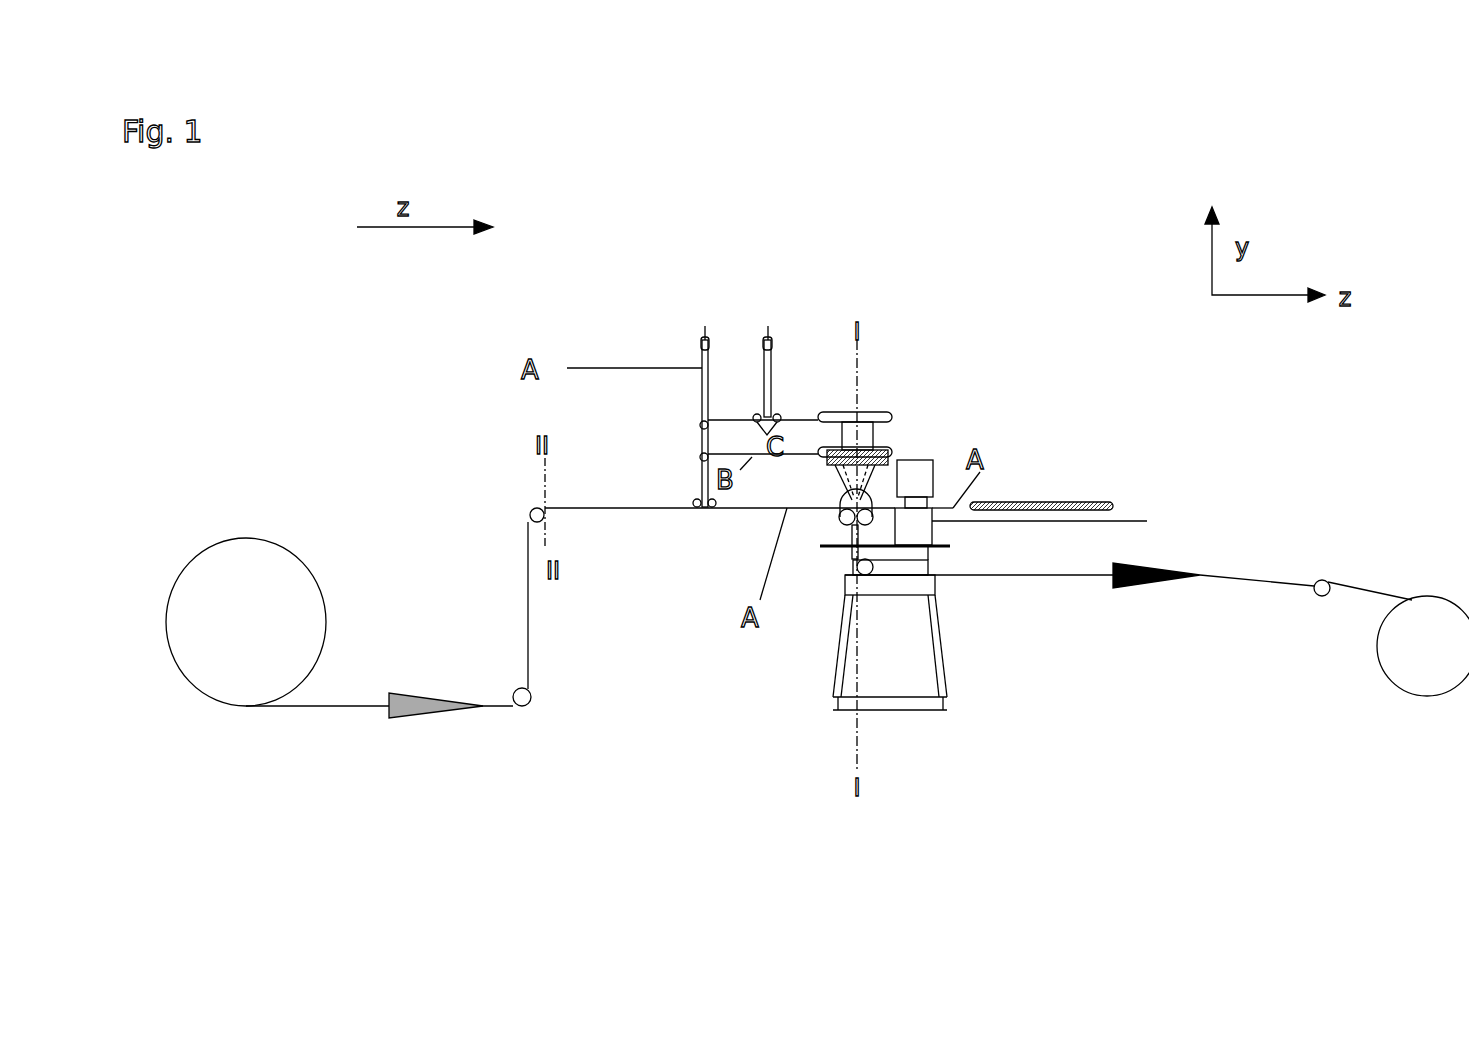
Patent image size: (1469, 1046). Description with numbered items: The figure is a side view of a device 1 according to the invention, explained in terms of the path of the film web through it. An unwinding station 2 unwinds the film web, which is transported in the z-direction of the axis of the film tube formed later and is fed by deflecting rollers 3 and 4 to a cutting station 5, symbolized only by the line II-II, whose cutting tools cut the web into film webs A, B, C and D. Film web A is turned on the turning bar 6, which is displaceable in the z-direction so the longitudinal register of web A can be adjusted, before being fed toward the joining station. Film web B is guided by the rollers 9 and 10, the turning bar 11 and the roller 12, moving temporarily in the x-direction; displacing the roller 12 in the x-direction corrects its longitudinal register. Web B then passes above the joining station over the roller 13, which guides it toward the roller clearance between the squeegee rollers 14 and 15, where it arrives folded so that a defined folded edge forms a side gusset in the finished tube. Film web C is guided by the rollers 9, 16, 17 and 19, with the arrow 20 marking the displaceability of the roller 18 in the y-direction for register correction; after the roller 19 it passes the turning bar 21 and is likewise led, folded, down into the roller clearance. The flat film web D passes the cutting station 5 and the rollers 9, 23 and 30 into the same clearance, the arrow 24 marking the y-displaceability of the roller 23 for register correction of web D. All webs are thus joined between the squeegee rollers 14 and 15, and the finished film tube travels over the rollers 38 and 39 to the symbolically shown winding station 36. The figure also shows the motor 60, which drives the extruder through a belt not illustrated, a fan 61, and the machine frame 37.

The device 1 is at (633, 265).
The unwinding station 2 is at (270, 569).
The deflecting roller 3 is at (526, 705).
The deflecting roller 4 is at (530, 516).
The cutting station 5 is at (511, 481).
The turning bar 6 is at (1050, 500).
The roller 9 is at (691, 498).
The roller 10 is at (700, 455).
The turning bar 11 is at (890, 448).
The roller 12 is at (892, 451).
The roller 13 is at (838, 458).
The squeegee roller 14 is at (845, 523).
The squeegee roller 15 is at (871, 519).
The roller 16 is at (700, 420).
The roller 17 is at (755, 414).
The roller 18 is at (770, 330).
The roller 19 is at (780, 414).
The arrow 20 is at (766, 333).
The turning bar 21 is at (880, 414).
The roller 23 is at (702, 333).
The arrow 24 is at (706, 328).
The roller 30 is at (712, 510).
The winding station 36 is at (1410, 651).
The machine frame 37 is at (838, 645).
The roller 38 is at (871, 573).
The roller 39 is at (1326, 580).
The motor 60 is at (1058, 523).
The fan 61 is at (927, 468).